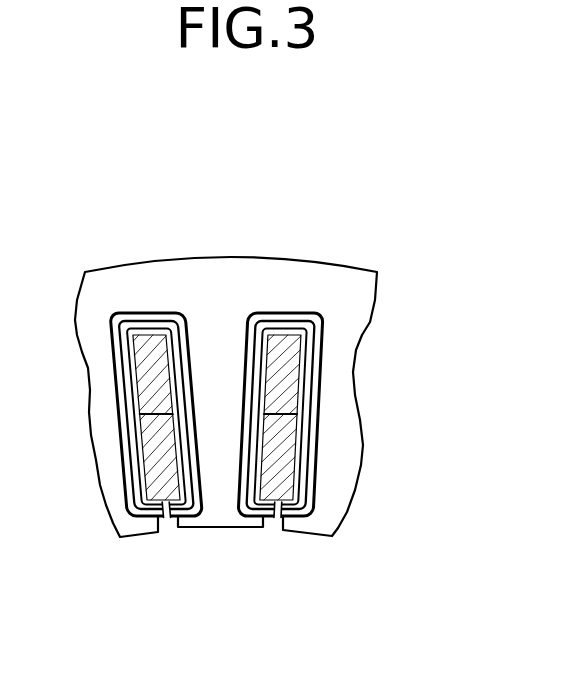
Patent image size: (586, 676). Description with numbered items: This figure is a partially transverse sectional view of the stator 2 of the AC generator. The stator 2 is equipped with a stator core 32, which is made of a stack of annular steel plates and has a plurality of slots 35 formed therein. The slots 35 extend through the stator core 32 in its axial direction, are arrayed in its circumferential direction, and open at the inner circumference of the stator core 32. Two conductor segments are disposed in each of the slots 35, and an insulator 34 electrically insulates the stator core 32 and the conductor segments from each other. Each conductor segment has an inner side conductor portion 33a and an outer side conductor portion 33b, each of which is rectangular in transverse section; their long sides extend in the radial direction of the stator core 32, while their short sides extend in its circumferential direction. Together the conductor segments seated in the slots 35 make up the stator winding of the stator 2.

The stator 2 is at (277, 341).
The stator core 32 is at (226, 355).
The inner side conductor portion 33a is at (294, 457).
The outer side conductor portion 33b is at (297, 374).
The insulator 34 is at (289, 403).
The slots 35 is at (223, 349).